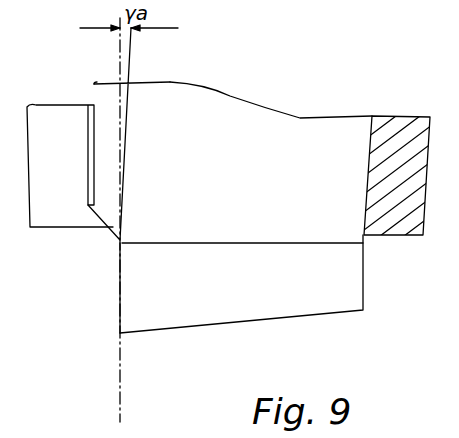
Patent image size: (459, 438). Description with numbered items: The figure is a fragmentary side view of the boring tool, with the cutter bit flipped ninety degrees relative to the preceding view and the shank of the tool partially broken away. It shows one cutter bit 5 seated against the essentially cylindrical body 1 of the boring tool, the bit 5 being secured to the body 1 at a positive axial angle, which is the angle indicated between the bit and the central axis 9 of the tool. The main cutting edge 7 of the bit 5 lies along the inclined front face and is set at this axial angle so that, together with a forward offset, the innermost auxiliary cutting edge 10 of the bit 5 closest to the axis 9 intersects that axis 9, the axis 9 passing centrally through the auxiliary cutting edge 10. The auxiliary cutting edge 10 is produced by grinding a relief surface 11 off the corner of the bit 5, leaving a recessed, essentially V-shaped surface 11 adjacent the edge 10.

The cylindrical body 1 is at (68, 169).
The cutter bit 5 is at (182, 176).
The main cutting edge 7 is at (129, 125).
The central axis 9 is at (122, 380).
The auxiliary cutting edge 10 is at (118, 290).
The relief surface 11 is at (338, 277).